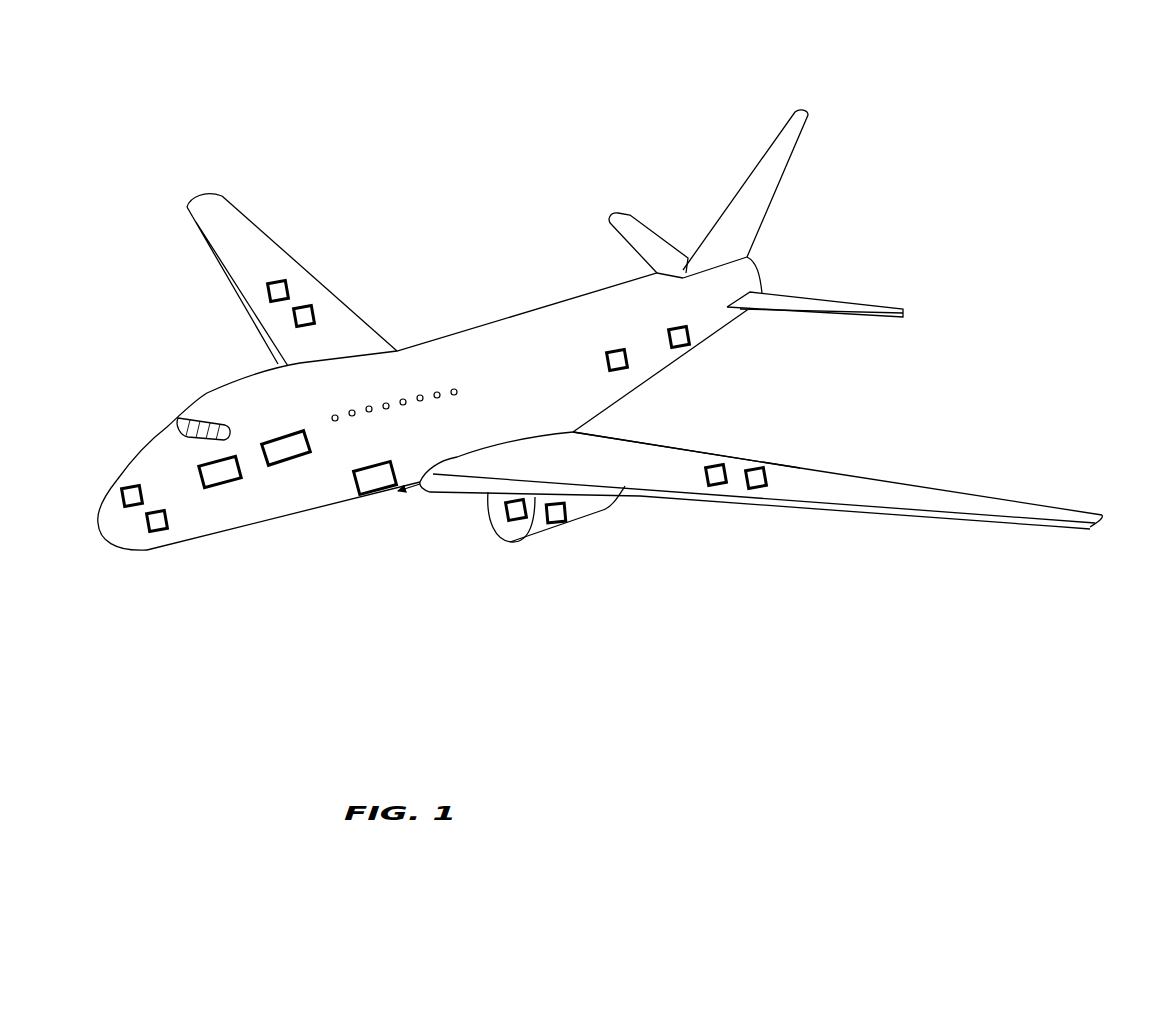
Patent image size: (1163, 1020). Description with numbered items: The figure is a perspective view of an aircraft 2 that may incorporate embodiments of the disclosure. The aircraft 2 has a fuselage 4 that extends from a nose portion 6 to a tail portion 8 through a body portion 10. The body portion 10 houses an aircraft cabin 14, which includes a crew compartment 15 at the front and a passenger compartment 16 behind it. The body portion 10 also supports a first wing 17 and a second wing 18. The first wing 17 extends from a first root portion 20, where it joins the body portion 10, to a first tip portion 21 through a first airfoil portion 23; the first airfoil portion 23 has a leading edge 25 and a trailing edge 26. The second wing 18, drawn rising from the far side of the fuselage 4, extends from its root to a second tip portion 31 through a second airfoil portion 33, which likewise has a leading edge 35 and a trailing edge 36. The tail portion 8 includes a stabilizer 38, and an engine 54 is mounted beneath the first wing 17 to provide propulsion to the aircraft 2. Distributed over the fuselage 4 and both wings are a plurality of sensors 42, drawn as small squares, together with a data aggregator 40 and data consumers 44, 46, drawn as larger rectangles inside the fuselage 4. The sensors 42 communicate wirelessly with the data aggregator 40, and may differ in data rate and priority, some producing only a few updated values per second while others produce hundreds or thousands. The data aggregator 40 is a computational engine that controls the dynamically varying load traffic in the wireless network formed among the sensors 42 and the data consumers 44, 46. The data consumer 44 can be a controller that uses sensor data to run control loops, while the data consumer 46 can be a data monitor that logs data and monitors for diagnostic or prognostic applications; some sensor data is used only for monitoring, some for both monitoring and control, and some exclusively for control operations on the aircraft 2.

The aircraft 2 is at (91, 391).
The fuselage 4 is at (239, 529).
The nose portion 6 is at (107, 525).
The tail portion 8 is at (716, 330).
The body portion 10 is at (613, 398).
The aircraft cabin 14 is at (433, 435).
The crew compartment 15 is at (178, 418).
The passenger compartment 16 is at (458, 350).
The first wing 17 is at (778, 513).
The second wing 18 is at (233, 203).
The first root portion 20 is at (513, 447).
The first tip portion 21 is at (1103, 520).
The first airfoil portion 23 is at (676, 452).
The leading edge 25 is at (613, 500).
The trailing edge 26 is at (800, 466).
The second tip portion 31 is at (190, 192).
The second airfoil portion 33 is at (254, 238).
The leading edge 35 is at (197, 226).
The trailing edge 36 is at (280, 240).
The stabilizer 38 is at (800, 284).
The data aggregator 40 is at (382, 497).
The sensors 42 is at (268, 296).
The data consumer 44 is at (203, 477).
The data consumer 46 is at (298, 438).
The engine 54 is at (490, 520).